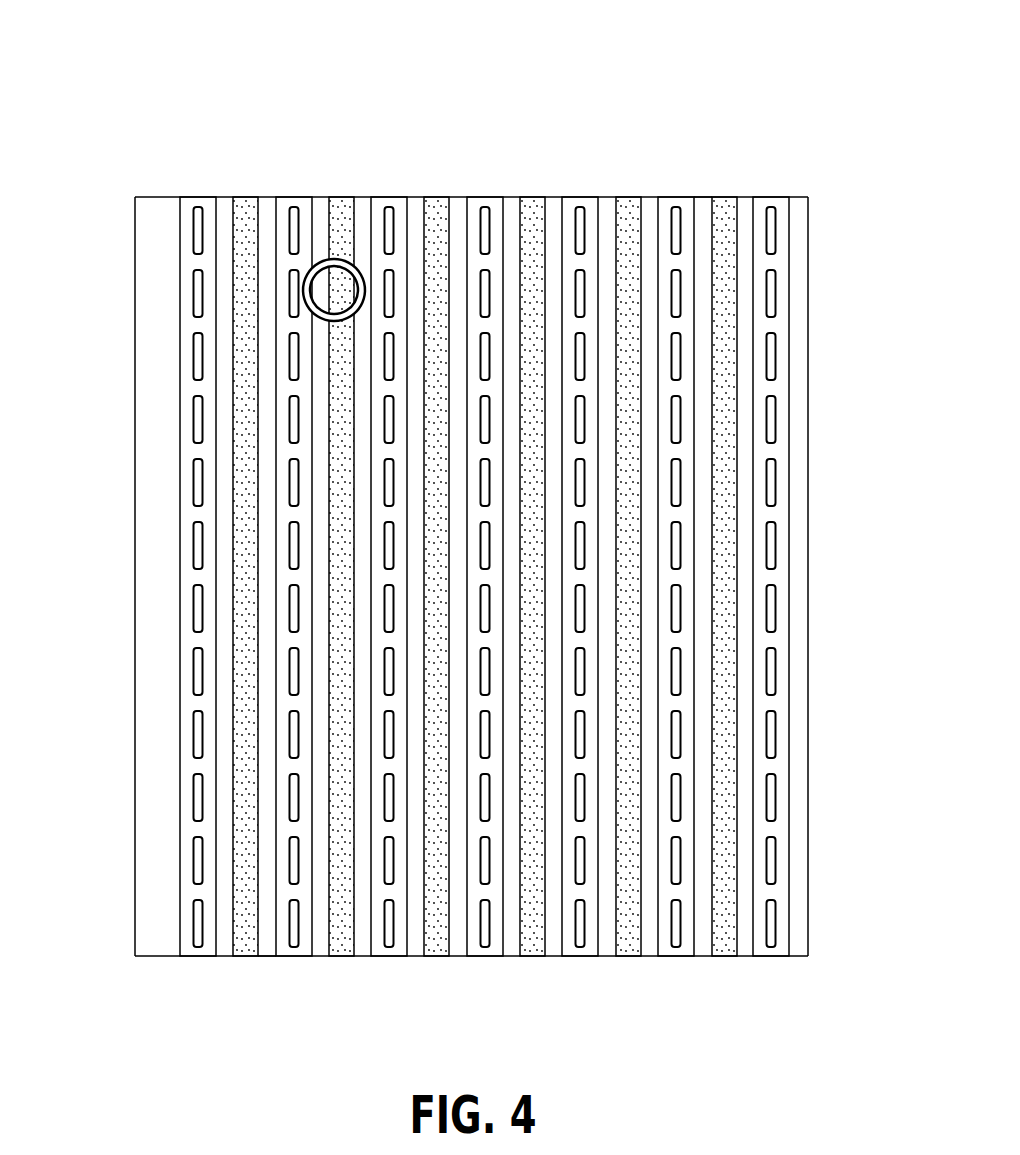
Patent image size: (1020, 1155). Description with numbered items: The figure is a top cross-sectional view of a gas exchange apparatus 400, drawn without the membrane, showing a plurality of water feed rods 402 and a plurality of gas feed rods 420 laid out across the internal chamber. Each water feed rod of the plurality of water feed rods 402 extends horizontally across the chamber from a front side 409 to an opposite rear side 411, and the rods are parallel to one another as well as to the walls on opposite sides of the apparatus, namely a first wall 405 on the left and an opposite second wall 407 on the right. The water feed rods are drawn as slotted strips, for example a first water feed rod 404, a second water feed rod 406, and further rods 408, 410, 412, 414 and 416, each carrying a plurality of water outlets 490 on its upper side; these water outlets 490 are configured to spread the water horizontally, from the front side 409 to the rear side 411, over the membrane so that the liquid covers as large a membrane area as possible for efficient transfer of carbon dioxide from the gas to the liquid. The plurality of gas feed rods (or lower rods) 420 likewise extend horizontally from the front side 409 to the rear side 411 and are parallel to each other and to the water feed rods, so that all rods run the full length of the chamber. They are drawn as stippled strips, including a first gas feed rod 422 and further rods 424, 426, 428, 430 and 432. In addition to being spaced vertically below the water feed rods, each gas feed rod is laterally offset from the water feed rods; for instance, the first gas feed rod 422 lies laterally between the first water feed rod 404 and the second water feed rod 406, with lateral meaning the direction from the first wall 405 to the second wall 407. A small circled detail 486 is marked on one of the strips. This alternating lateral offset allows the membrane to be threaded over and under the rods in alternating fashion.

The gas exchange apparatus 400 is at (222, 79).
The plurality of water feed rods 402 is at (522, 173).
The first water feed rod 404 is at (131, 542).
The first wall 405 is at (120, 316).
The second water feed rod 406 is at (285, 197).
The second wall 407 is at (826, 320).
The third slotted conductive trace 408 is at (378, 197).
The front side 409 is at (654, 970).
The fourth slotted conductive trace 410 is at (475, 197).
The rear side 411 is at (705, 185).
The fifth slotted conductive trace 412 is at (588, 197).
The sixth slotted conductive trace 414 is at (685, 197).
The seventh slotted conductive trace 416 is at (763, 197).
The plurality of gas feed rods 420 is at (289, 1010).
The first gas feed rod 422 is at (245, 956).
The second stippled conductive strip 424 is at (340, 956).
The third stippled conductive strip 426 is at (438, 956).
The fourth stippled conductive strip 428 is at (532, 956).
The fifth stippled conductive strip 430 is at (628, 956).
The sixth stippled conductive strip 432 is at (723, 956).
The via / contact region 486 is at (321, 260).
The plurality of water outlets 490 is at (180, 545).